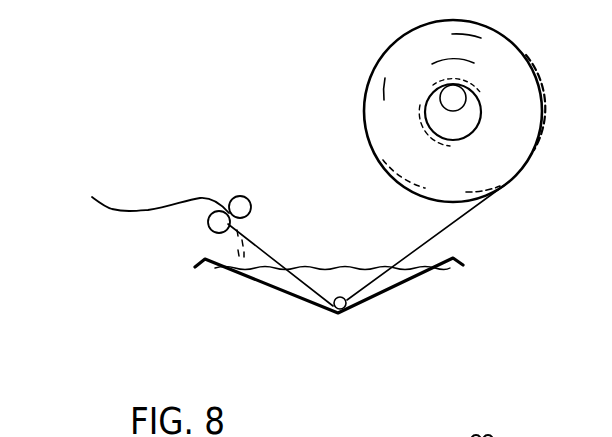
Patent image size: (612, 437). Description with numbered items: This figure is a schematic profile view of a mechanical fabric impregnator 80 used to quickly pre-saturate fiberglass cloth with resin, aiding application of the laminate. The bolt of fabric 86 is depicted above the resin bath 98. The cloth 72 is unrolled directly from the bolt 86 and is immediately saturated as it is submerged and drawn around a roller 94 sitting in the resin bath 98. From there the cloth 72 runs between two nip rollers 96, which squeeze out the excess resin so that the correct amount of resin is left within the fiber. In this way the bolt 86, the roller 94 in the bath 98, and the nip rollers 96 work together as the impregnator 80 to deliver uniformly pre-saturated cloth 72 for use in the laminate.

The cloth 72 is at (111, 209).
The mechanical fabric impregnator 80 is at (190, 180).
The bolt of fabric 86 is at (365, 113).
The roller 94 is at (341, 297).
The nip rollers 96 is at (258, 192).
The resin bath 98 is at (393, 293).